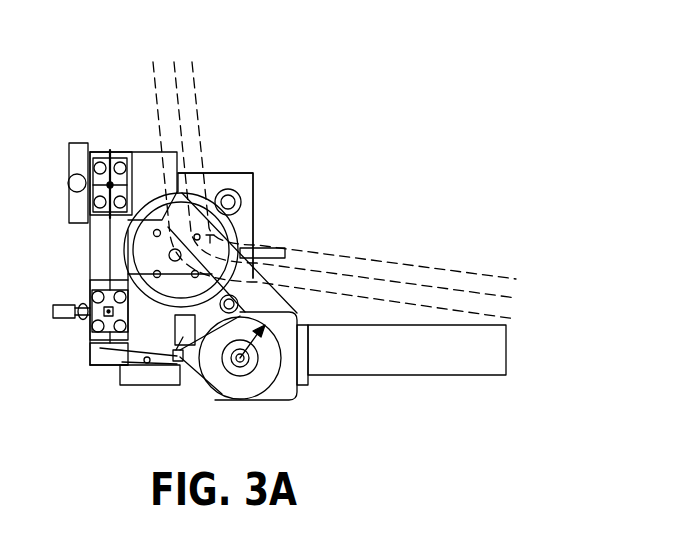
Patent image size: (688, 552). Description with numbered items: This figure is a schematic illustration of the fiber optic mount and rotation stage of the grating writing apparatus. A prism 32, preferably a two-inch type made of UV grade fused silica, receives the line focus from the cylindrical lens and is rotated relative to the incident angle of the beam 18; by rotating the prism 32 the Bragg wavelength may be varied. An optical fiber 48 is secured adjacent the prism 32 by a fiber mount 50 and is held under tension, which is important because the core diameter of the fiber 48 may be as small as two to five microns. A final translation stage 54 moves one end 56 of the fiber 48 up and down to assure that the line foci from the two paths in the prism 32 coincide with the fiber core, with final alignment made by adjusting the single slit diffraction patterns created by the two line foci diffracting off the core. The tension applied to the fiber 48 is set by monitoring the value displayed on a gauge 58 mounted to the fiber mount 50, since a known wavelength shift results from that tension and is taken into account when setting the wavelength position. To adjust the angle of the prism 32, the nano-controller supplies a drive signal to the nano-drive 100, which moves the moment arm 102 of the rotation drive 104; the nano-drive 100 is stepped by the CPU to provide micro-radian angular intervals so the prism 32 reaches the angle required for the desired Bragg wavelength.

The beam 18 is at (337, 278).
The prism 32 is at (238, 246).
The optical fiber 48 is at (96, 130).
The fiber mount 50 is at (82, 318).
The final translation stage 54 is at (82, 198).
The end of the fiber 56 is at (110, 150).
The gauge 58 is at (243, 382).
The nano-drive 100 is at (476, 362).
The moment arm 102 is at (128, 373).
The rotation drive 104 is at (250, 245).